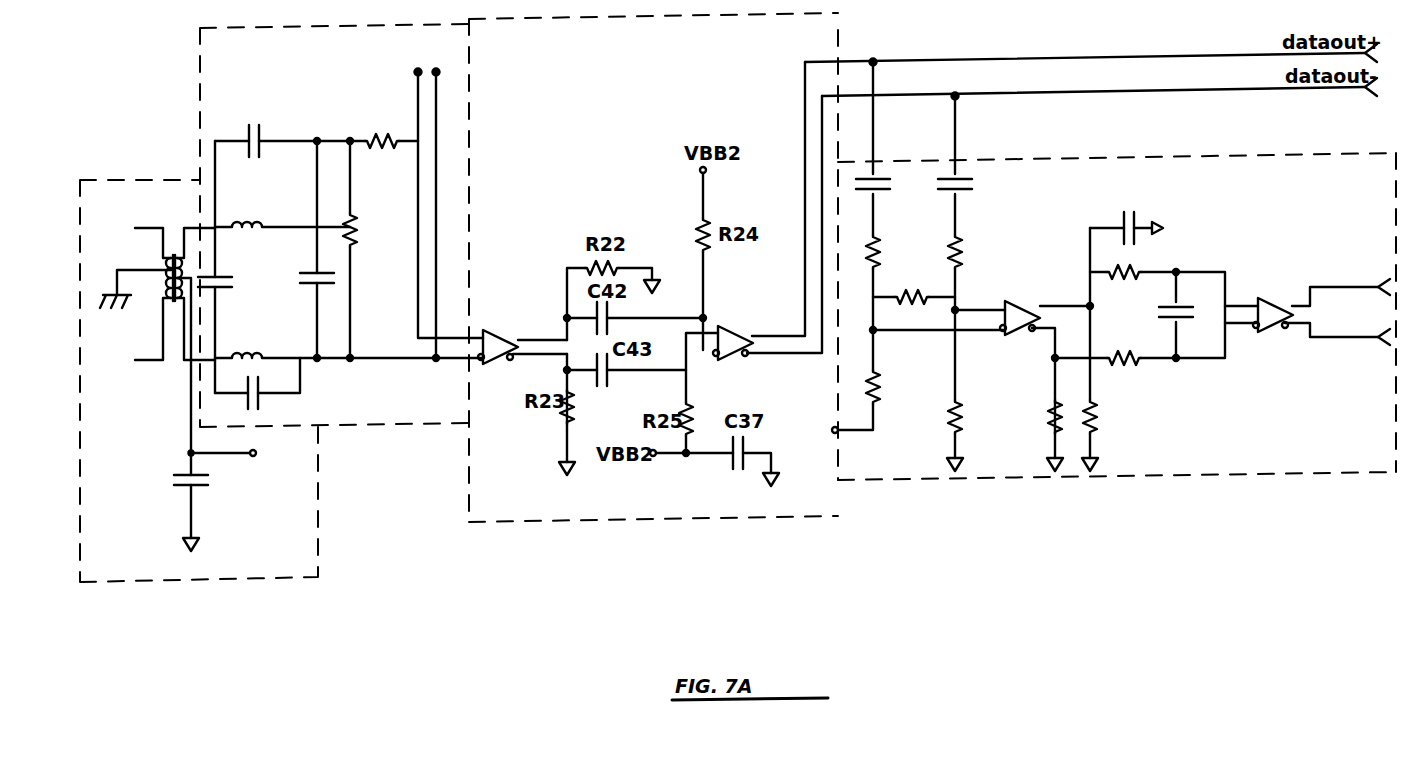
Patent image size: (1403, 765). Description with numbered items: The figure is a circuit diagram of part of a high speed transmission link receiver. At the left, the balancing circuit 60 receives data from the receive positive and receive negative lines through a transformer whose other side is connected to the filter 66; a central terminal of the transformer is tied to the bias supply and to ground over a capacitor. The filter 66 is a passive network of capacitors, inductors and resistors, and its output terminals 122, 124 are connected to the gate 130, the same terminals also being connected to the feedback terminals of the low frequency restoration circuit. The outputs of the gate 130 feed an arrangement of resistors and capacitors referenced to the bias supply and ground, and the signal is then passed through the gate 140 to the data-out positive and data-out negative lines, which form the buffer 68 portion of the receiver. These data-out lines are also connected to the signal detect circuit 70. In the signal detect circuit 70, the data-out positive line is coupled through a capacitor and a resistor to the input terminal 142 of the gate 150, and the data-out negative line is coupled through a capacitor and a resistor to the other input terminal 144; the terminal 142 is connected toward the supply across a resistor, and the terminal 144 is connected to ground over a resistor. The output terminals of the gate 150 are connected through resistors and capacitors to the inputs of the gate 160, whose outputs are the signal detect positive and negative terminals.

The balancing circuit 60 is at (323, 507).
The filter 66 is at (198, 88).
The buffer 68 is at (838, 32).
The signal detect circuit 70 is at (1050, 482).
The output terminal of filter 122 is at (452, 197).
The output terminal of filter 124 is at (431, 186).
The gate 130 is at (499, 342).
The gate 140 is at (733, 332).
The input terminal of gate 150 142 is at (876, 332).
The input terminal of gate 150 144 is at (958, 308).
The gate 150 is at (1021, 330).
The gate 160 is at (1270, 304).